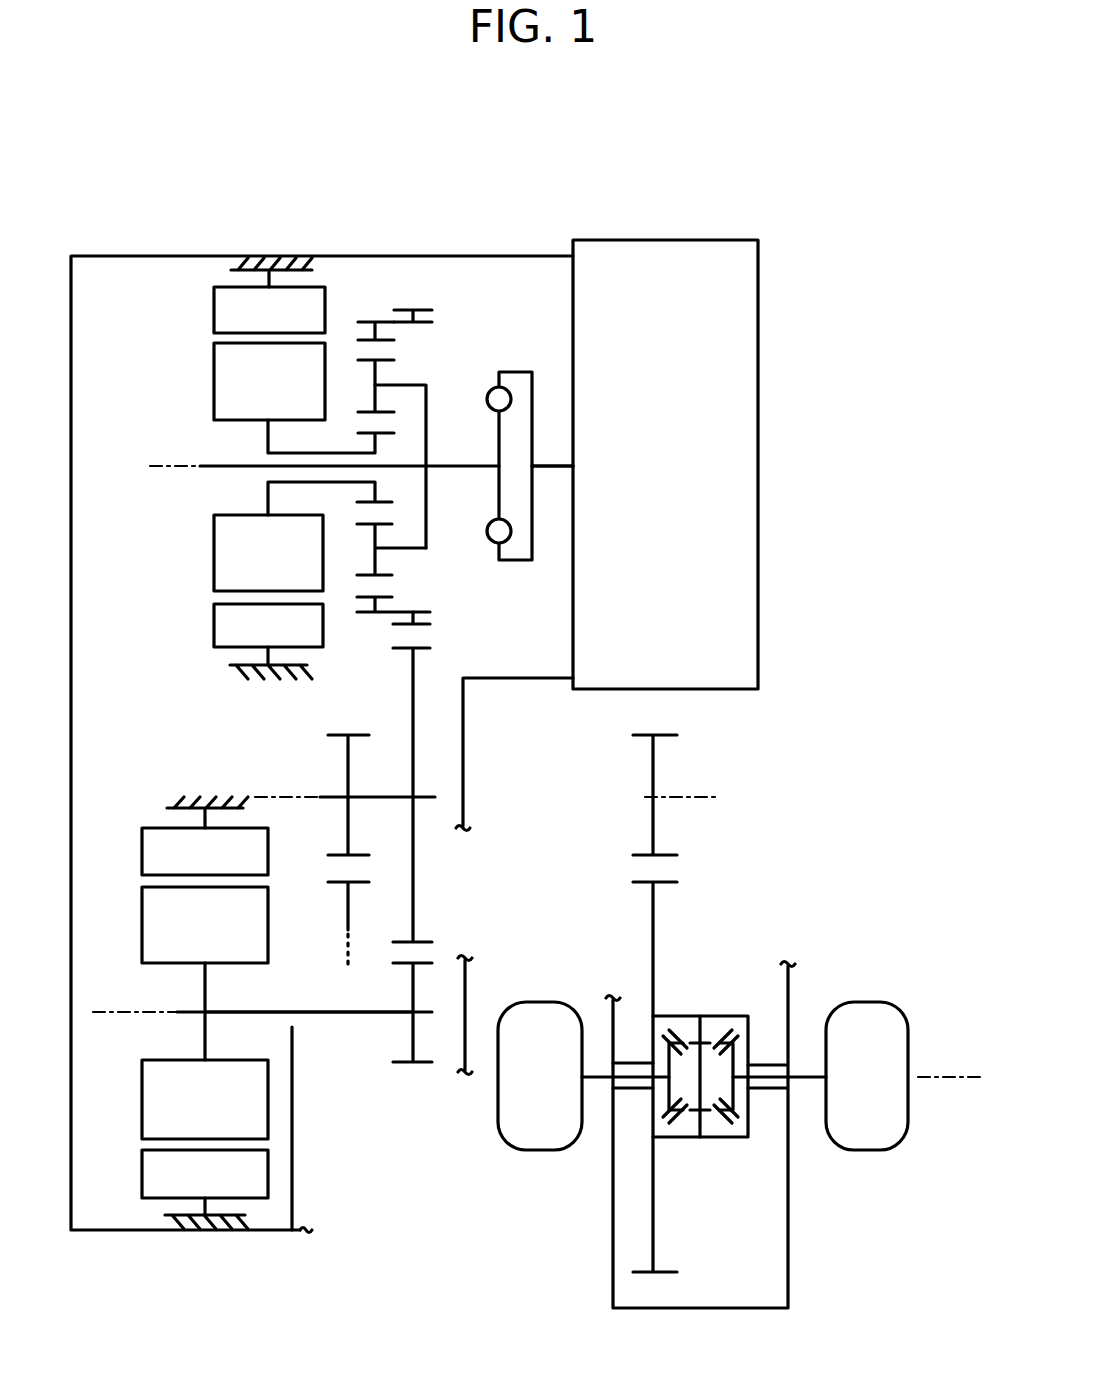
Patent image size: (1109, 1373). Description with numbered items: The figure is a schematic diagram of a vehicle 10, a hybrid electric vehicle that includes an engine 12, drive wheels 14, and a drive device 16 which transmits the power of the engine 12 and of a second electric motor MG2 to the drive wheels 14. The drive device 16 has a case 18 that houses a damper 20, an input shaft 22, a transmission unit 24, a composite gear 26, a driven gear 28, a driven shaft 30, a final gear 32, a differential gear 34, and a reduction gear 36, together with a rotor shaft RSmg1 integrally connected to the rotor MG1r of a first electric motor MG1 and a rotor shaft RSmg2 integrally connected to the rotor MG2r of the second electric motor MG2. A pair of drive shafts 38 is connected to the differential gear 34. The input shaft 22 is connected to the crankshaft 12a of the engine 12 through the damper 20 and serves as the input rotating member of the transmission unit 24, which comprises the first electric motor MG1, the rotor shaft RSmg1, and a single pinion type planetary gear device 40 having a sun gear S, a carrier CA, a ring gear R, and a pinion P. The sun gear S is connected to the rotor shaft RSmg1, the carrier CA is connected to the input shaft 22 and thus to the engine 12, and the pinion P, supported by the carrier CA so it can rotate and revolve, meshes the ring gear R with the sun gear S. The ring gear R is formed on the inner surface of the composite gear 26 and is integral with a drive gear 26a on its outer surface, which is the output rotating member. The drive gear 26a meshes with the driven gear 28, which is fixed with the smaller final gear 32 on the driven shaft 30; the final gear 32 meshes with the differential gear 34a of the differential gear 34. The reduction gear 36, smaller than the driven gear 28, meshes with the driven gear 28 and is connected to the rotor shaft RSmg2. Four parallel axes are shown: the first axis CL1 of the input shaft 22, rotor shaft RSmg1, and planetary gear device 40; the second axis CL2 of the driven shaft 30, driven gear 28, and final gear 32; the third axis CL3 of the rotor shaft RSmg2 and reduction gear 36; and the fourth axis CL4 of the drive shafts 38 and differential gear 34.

The vehicle 10 is at (622, 148).
The engine 12 is at (716, 676).
The crankshaft 12a is at (554, 470).
The drive wheels 14 is at (540, 1137).
The drive device 16 is at (414, 1279).
The case 18 is at (163, 256).
The damper 20 is at (505, 374).
The input shaft 22 is at (455, 463).
The transmission unit 24 is at (379, 374).
The composite gear 26 is at (391, 613).
The drive gear 26a is at (420, 615).
The driven gear 28 is at (424, 661).
The driven shaft 30 is at (343, 790).
The final gear 32 is at (342, 855).
The differential gear 34 is at (711, 1166).
The differential gear 34a is at (340, 884).
The reduction gear 36 is at (402, 1057).
The drive shafts 38 is at (595, 1080).
The planetary gear device 40 is at (376, 292).
The ring gear R is at (363, 327).
The pinion P is at (373, 365).
The sun gear S is at (380, 438).
The carrier CA is at (404, 388).
The first axis CL1 is at (162, 462).
The second axis CL2 is at (283, 793).
The third axis CL3 is at (112, 1008).
The fourth axis CL4 is at (952, 1074).
The first electric motor MG1 is at (212, 472).
The rotor MG1r is at (232, 559).
The second electric motor MG2 is at (177, 974).
The rotor MG2r is at (198, 1078).
The rotor shaft RSmg1 is at (283, 479).
The rotor shaft RSmg2 is at (358, 1012).